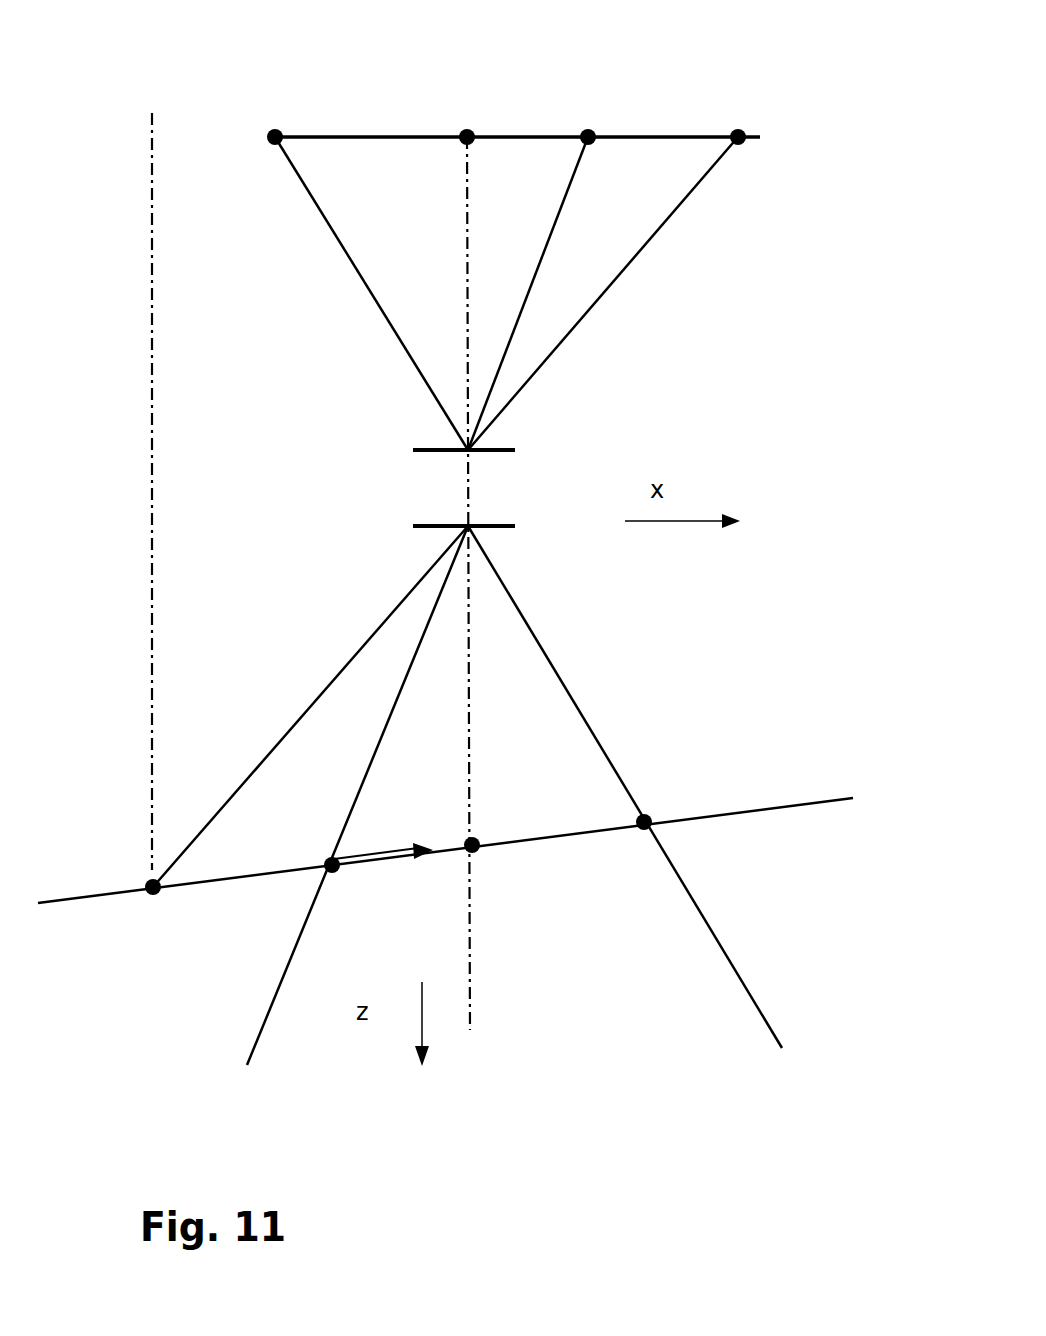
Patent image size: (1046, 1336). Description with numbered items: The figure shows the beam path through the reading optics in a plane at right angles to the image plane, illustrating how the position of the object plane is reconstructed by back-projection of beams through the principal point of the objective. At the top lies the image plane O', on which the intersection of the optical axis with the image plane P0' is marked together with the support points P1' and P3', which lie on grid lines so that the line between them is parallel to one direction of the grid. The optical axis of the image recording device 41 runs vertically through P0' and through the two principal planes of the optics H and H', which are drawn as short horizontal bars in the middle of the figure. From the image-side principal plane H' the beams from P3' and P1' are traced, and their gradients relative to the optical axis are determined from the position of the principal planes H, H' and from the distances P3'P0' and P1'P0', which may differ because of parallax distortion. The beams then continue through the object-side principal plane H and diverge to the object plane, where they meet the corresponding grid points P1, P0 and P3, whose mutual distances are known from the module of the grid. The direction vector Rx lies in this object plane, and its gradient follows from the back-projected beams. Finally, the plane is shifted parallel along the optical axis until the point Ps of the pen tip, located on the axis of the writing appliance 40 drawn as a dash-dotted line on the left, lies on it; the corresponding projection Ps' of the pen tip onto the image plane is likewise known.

The axis of the writing appliance 40 is at (152, 560).
The optical axis of the image recording device 41 is at (468, 337).
The principal plane of the optics H is at (488, 527).
The principal plane of the optics H' is at (495, 451).
The point on the object plane P0 is at (501, 799).
The point on the object plane P1 is at (297, 833).
The point on the object plane P3 is at (674, 796).
The intersection of the optical axis with the image plane P0' is at (463, 90).
The support point P1' is at (600, 105).
The support point P3' is at (249, 112).
The image plane O' is at (541, 79).
The position of the writing tip Ps is at (141, 939).
The projection of the writing tip onto the image plane Ps' is at (787, 89).
The direction vector in the object plane Rx is at (383, 870).